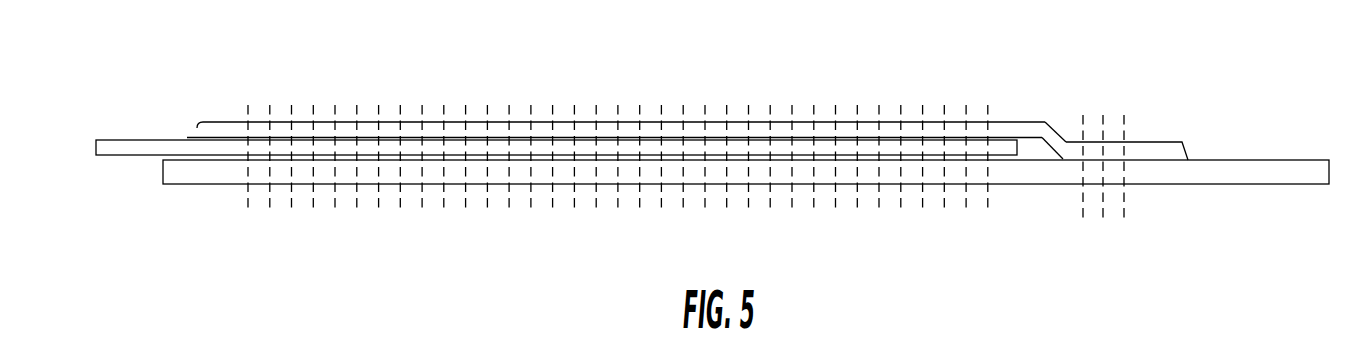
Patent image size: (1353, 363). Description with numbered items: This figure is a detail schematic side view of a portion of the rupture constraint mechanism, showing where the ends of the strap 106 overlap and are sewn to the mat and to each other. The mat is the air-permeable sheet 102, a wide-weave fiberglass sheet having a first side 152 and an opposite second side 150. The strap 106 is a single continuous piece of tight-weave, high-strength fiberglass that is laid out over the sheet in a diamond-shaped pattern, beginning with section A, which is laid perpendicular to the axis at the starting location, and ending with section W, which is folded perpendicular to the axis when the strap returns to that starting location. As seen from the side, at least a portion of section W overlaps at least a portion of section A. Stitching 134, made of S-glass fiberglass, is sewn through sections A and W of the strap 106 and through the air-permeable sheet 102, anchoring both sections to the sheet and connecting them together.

The air-permeable sheet 102 is at (1207, 174).
The section A of the strap A is at (163, 147).
The strap 106 is at (912, 110).
The section W of the strap W is at (1007, 127).
The stitching 134 is at (878, 98).
The second side of the air-permeable sheet 150 is at (1032, 222).
The first side of the air-permeable sheet 152 is at (1248, 130).